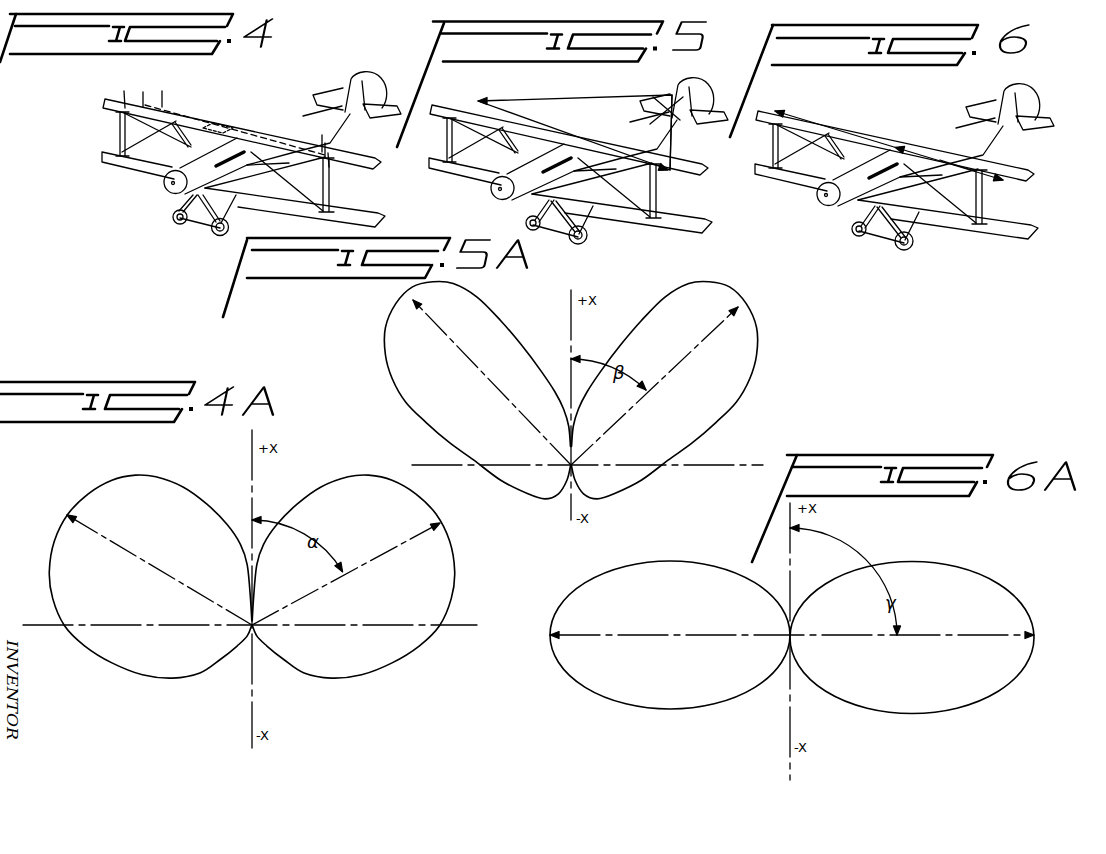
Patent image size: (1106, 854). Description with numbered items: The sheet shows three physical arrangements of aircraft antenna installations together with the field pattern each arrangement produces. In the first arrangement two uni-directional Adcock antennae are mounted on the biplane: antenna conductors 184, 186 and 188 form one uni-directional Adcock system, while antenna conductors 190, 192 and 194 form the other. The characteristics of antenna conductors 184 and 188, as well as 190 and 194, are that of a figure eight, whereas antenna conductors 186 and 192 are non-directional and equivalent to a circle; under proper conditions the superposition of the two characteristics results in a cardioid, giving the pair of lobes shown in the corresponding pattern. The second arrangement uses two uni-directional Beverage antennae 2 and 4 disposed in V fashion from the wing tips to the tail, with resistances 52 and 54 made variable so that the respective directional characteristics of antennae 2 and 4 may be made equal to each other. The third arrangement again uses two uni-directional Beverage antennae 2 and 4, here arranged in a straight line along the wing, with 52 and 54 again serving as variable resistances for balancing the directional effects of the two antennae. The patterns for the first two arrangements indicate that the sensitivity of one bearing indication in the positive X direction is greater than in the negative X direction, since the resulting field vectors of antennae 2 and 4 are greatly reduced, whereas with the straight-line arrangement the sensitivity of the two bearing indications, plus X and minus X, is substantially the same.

In FIG. 4, the antenna conductor 184 is at (124, 92).
In FIG. 4, the antenna conductor 186 is at (143, 96).
In FIG. 4, the antenna conductor 188 is at (163, 93).
In FIG. 4, the antenna conductor 190 is at (322, 137).
In FIG. 4, the antenna conductor 192 is at (325, 150).
In FIG. 4, the antenna conductor 194 is at (331, 162).
In FIG. 5, the antenna 2 is at (571, 97).
In FIG. 6, the antenna 2 is at (813, 116).
In FIG. 5, the antenna 4 is at (674, 146).
In FIG. 6, the antenna 4 is at (963, 149).
In FIG. 5, the variable resistance 52 is at (475, 101).
In FIG. 6, the variable resistance 52 is at (785, 113).
In FIG. 5, the variable resistance 54 is at (670, 169).
In FIG. 6, the variable resistance 54 is at (982, 168).